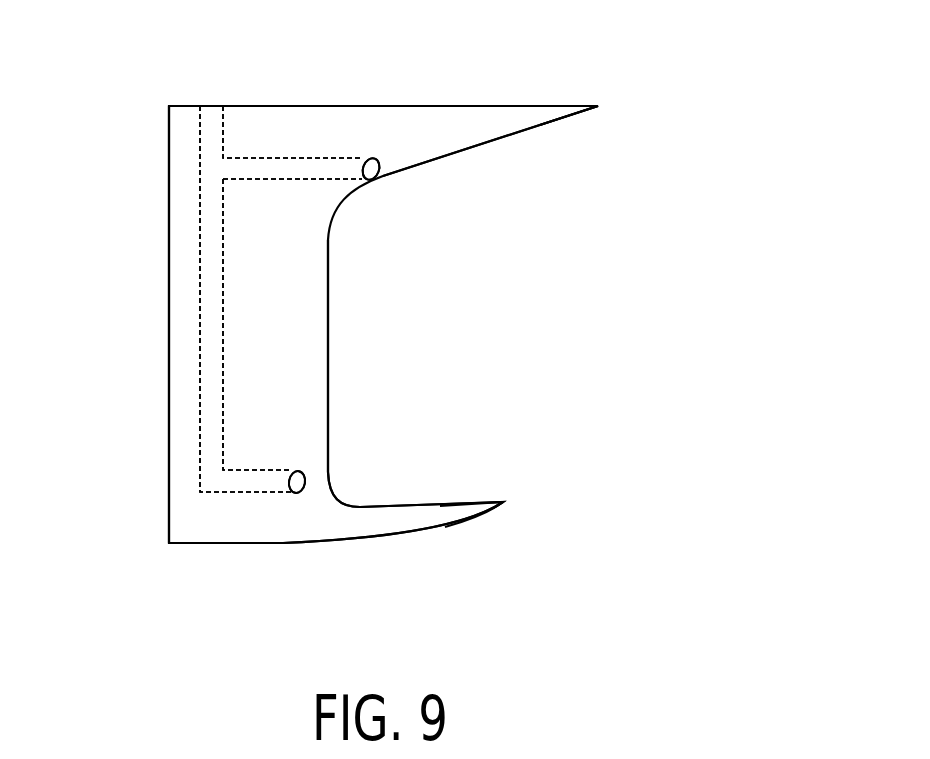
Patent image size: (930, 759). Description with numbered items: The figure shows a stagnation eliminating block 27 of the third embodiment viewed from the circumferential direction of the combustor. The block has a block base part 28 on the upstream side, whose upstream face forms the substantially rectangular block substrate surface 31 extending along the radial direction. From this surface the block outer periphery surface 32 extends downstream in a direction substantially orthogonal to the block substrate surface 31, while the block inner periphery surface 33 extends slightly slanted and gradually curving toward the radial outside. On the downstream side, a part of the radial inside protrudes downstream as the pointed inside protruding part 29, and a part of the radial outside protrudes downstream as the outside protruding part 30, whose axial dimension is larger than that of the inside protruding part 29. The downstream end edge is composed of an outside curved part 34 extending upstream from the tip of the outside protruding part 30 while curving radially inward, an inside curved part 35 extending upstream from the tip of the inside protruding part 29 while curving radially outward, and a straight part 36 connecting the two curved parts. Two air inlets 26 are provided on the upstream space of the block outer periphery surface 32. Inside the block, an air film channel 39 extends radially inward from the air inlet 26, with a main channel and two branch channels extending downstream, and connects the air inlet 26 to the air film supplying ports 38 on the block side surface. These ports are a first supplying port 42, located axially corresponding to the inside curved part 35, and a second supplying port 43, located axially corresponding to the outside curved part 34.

The air inlet 26 is at (200, 108).
The stagnation eliminating block 27 is at (634, 98).
The block base part 28 is at (178, 558).
The inside protruding part 29 is at (470, 517).
The outside protruding part 30 is at (560, 106).
The block substrate surface 31 is at (168, 210).
The block outer periphery surface 32 is at (380, 106).
The block inner periphery surface 33 is at (322, 543).
The outside curved part 34 is at (476, 166).
The inside curved part 35 is at (369, 476).
The straight part 36 is at (347, 325).
The air film supplying port 38 is at (334, 325).
The air film channel 39 is at (265, 160).
The first supplying port 42 is at (299, 481).
The second supplying port 43 is at (372, 170).